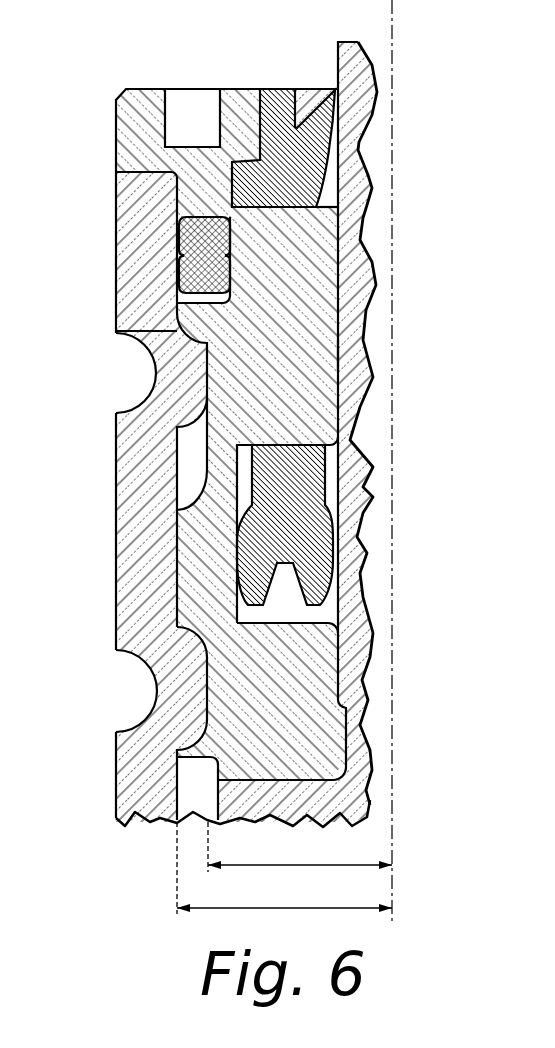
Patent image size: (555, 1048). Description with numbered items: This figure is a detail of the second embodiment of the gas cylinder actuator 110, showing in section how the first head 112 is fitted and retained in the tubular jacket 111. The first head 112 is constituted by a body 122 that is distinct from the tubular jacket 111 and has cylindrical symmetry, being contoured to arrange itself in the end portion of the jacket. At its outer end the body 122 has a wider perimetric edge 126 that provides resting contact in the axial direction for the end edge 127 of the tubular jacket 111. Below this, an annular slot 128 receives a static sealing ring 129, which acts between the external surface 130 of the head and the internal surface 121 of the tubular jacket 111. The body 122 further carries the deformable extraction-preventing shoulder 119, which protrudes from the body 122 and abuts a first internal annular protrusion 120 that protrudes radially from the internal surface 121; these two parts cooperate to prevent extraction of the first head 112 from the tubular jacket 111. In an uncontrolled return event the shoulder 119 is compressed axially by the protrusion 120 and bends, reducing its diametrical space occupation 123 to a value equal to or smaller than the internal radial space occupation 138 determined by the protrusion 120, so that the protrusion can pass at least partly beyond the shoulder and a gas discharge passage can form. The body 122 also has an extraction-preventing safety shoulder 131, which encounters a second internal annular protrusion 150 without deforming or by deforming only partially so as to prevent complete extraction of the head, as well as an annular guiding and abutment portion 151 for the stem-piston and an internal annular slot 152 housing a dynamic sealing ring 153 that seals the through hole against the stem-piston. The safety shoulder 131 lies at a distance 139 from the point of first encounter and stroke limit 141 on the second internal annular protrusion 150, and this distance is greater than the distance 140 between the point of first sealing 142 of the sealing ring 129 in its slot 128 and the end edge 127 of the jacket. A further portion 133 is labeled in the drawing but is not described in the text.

The gas cylinder actuator 110 is at (9, 357).
The tubular jacket 111 is at (112, 532).
The first head 112 is at (347, 352).
The deformable extraction-preventing shoulder 119 is at (177, 757).
The first internal annular protrusion 120 is at (180, 717).
The internal surface 121 is at (177, 303).
The body 122 is at (325, 224).
The diametrical space occupation 123 is at (262, 887).
The wider perimetric edge 126 is at (147, 107).
The end edge 127 is at (137, 163).
The annular slot 128 is at (143, 333).
The static sealing ring 129 is at (220, 217).
The external surface 130 is at (232, 289).
The extraction-preventing safety shoulder 131 is at (200, 560).
The portion 133 is at (5, 670).
The internal radial space occupation 138 is at (272, 865).
The distance 139 is at (177, 507).
The distance 140 is at (116, 237).
The point of first encounter and stroke limit 141 is at (180, 431).
The point of first sealing 142 is at (177, 258).
The second internal annular protrusion 150 is at (177, 398).
The annular guiding and abutment portion 151 is at (270, 663).
The internal annular slot 152 is at (292, 615).
The dynamic sealing ring 153 is at (307, 505).